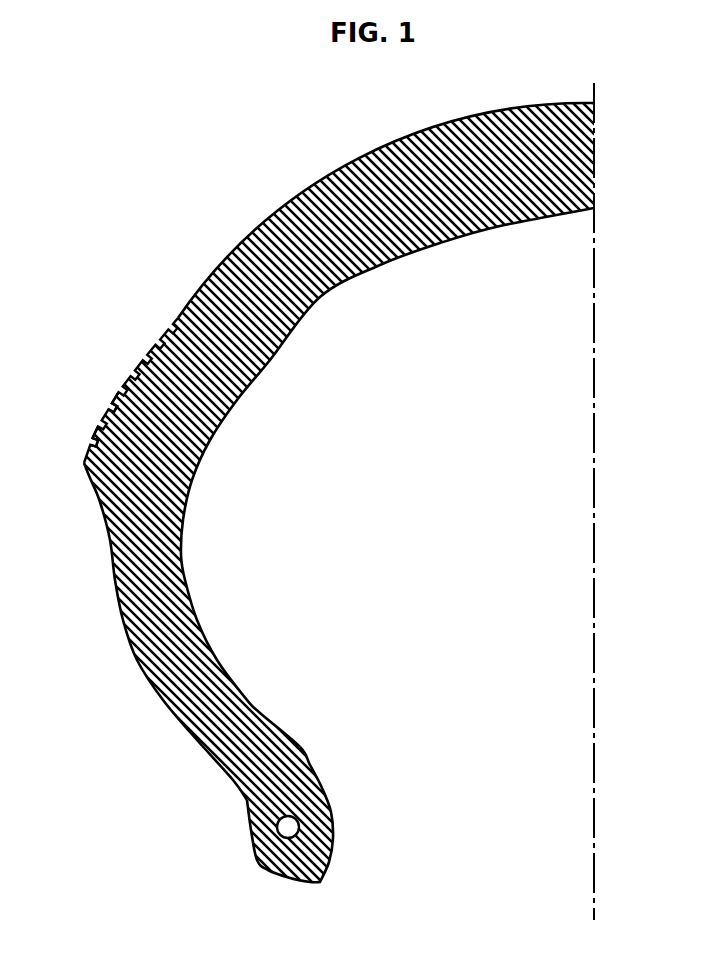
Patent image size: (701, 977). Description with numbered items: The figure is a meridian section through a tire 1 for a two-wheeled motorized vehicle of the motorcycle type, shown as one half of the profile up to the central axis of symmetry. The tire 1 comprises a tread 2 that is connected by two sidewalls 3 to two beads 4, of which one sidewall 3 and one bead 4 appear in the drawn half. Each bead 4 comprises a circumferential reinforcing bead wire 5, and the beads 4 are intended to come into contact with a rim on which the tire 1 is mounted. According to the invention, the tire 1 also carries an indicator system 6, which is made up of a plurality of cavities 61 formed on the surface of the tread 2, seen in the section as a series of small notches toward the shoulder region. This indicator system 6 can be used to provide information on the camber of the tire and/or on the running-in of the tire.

The tire 1 is at (112, 222).
The tread 2 is at (265, 220).
The sidewall 3 is at (121, 631).
The bead 4 is at (333, 833).
The circumferential reinforcing bead wire 5 is at (282, 832).
The indicator system 6 is at (118, 283).
The cavity 61 is at (91, 446).